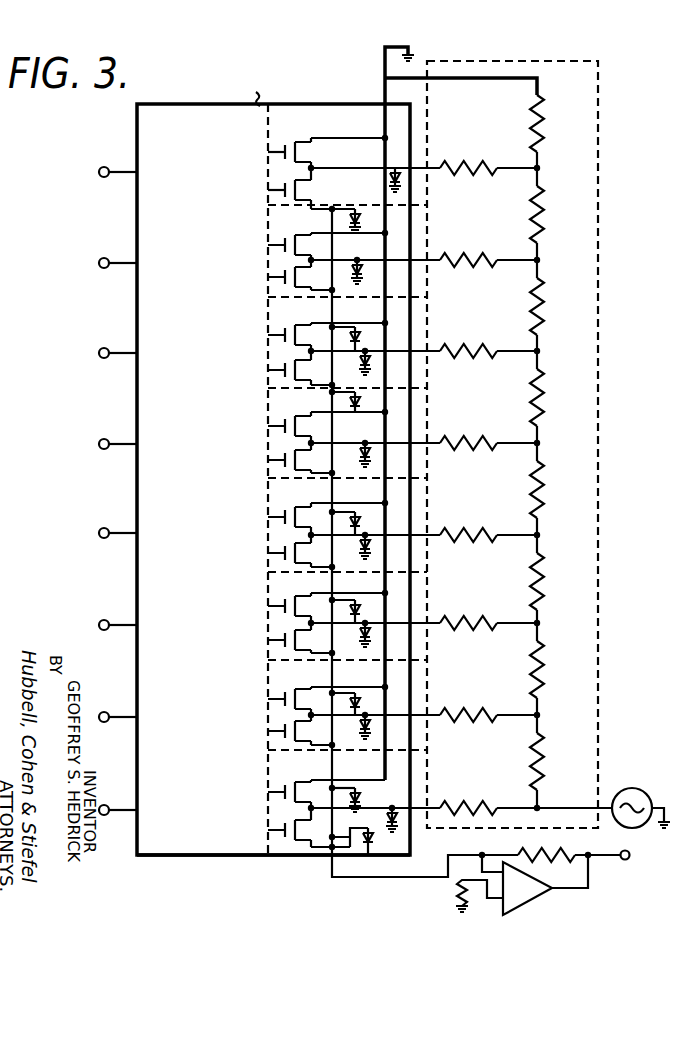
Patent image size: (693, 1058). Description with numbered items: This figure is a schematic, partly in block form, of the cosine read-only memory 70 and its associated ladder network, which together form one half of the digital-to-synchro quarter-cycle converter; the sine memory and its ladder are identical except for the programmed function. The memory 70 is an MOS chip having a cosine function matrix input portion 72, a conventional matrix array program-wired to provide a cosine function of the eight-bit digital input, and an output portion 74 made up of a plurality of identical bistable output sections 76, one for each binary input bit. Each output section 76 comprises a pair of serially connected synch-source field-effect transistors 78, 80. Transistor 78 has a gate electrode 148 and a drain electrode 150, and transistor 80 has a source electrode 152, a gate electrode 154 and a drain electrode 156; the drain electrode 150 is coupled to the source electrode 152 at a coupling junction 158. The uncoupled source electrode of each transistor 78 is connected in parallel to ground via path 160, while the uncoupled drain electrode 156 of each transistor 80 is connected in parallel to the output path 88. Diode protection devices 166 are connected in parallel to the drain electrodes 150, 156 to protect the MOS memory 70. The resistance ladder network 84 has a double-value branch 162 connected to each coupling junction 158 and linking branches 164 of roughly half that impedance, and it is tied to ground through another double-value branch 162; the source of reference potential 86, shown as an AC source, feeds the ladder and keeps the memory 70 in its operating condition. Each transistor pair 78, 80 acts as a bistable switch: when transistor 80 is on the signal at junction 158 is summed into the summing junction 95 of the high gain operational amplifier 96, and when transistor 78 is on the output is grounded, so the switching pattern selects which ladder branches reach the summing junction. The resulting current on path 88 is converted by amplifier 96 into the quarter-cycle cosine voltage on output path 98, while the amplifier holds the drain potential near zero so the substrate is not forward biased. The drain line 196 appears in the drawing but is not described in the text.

The cosine read-only memory 70 is at (137, 121).
The cosine function matrix input portion 72 is at (196, 856).
The output portion 74 is at (271, 856).
The bistable output section 76 is at (266, 112).
The field-effect transistor 78 is at (286, 145).
The field-effect transistor 80 is at (291, 202).
The R-2R ladder network 84 is at (534, 444).
The source of reference potential 86 is at (641, 779).
The output path 88 is at (336, 866).
The summing junction 95 is at (480, 853).
The high gain operational amplifier 96 is at (530, 898).
The output path 98 is at (624, 860).
The gate electrode 148 is at (282, 153).
The drain electrode 150 is at (300, 167).
The source electrode 152 is at (303, 173).
The gate electrode 154 is at (283, 190).
The drain electrode 156 is at (307, 199).
The coupling junction 158 is at (295, 168).
The ground path 160 is at (384, 66).
The 2R branch 162 is at (528, 113).
The R linking branch 164 is at (542, 226).
The diode protection device 166 is at (398, 192).
The drain line 196 is at (318, 138).